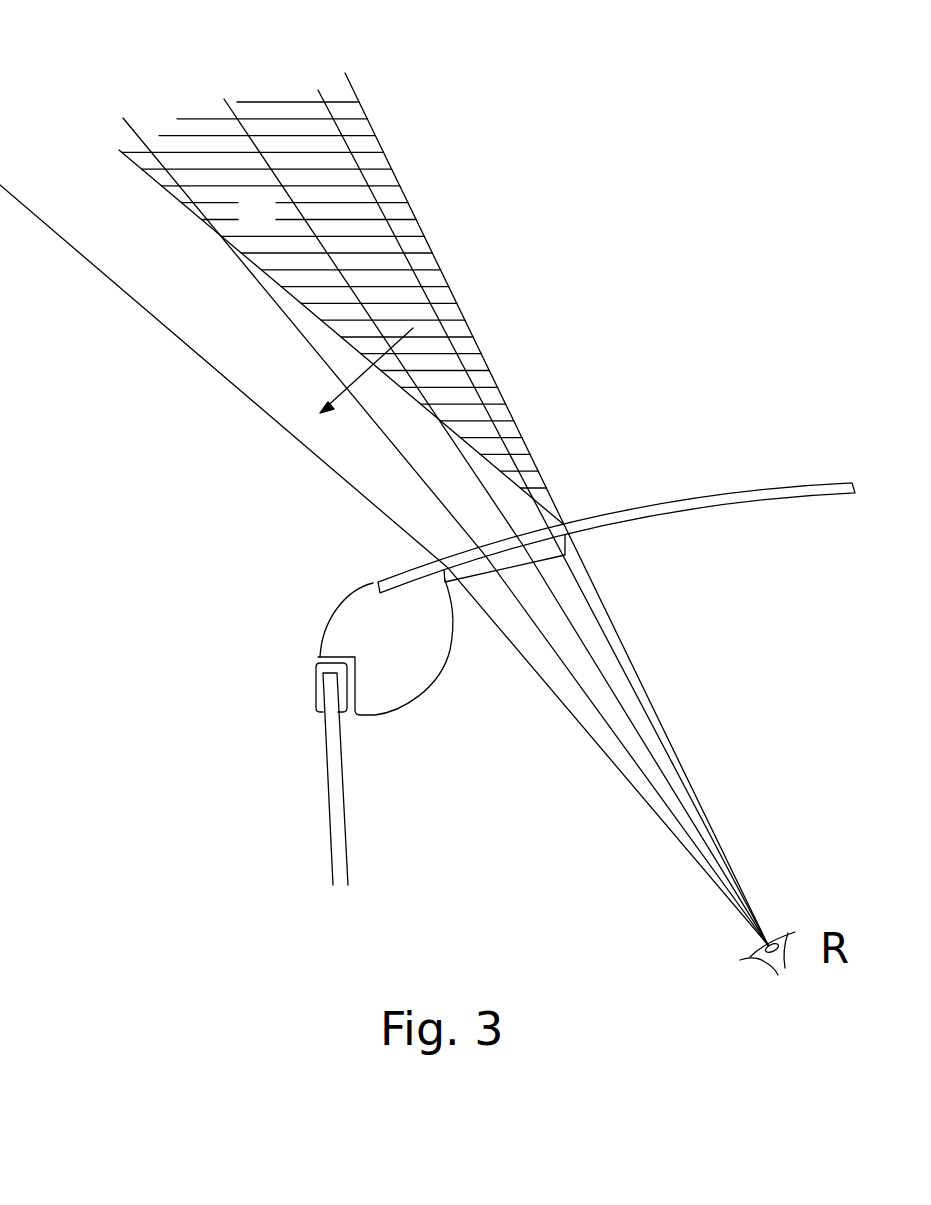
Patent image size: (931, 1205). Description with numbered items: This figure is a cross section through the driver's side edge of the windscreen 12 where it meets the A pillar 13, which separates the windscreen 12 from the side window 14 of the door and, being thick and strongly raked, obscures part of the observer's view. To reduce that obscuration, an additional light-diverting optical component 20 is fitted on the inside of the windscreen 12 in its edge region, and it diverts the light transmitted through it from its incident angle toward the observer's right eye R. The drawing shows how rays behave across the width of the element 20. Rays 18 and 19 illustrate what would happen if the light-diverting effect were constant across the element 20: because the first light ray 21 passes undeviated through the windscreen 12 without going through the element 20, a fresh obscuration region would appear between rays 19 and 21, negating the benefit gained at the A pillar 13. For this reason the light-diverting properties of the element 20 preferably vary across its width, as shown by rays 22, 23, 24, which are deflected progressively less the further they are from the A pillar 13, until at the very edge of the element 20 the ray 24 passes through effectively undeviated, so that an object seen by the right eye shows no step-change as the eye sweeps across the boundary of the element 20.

The windscreen 12 is at (705, 501).
The A pillar 13 is at (355, 630).
The side window 14 is at (325, 790).
The light ray 18 is at (160, 322).
The light ray 19 is at (270, 277).
The light-diverting optical component 20 is at (553, 560).
The first light ray 21 is at (411, 208).
The light ray 22 is at (123, 118).
The light ray 23 is at (217, 101).
The light ray 24 is at (363, 175).